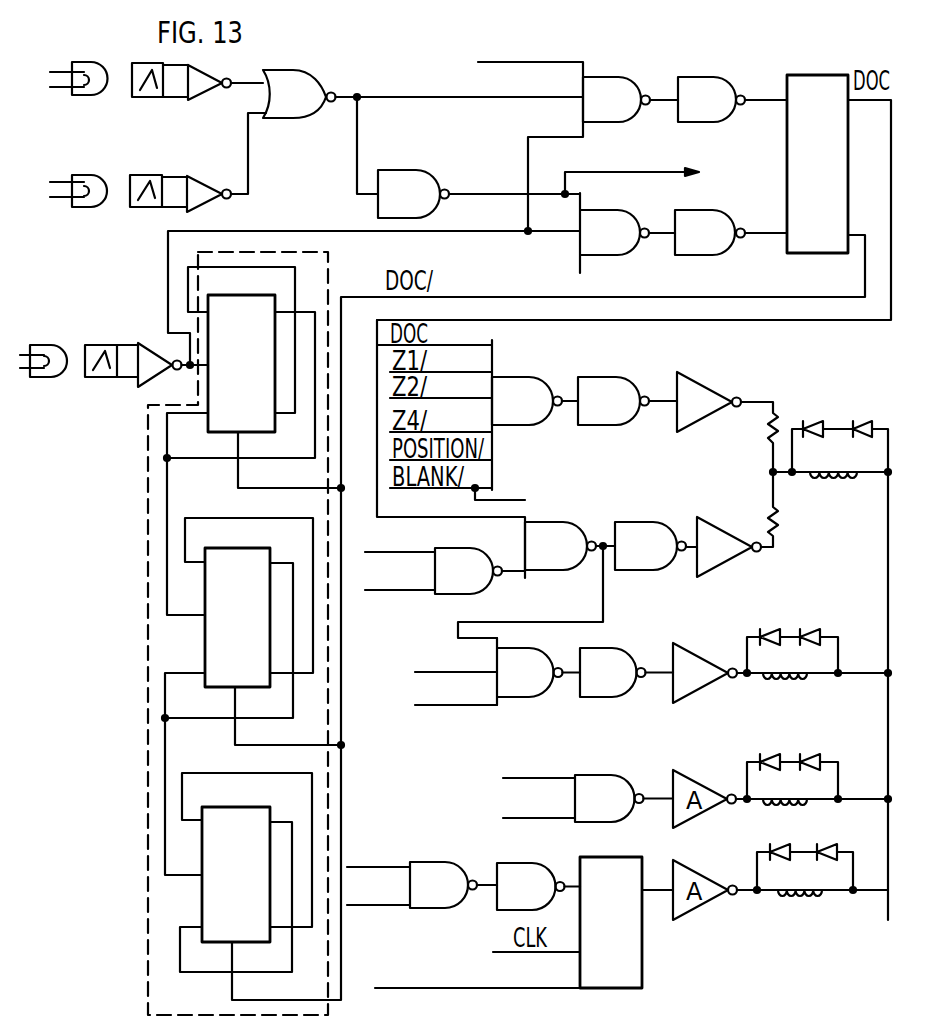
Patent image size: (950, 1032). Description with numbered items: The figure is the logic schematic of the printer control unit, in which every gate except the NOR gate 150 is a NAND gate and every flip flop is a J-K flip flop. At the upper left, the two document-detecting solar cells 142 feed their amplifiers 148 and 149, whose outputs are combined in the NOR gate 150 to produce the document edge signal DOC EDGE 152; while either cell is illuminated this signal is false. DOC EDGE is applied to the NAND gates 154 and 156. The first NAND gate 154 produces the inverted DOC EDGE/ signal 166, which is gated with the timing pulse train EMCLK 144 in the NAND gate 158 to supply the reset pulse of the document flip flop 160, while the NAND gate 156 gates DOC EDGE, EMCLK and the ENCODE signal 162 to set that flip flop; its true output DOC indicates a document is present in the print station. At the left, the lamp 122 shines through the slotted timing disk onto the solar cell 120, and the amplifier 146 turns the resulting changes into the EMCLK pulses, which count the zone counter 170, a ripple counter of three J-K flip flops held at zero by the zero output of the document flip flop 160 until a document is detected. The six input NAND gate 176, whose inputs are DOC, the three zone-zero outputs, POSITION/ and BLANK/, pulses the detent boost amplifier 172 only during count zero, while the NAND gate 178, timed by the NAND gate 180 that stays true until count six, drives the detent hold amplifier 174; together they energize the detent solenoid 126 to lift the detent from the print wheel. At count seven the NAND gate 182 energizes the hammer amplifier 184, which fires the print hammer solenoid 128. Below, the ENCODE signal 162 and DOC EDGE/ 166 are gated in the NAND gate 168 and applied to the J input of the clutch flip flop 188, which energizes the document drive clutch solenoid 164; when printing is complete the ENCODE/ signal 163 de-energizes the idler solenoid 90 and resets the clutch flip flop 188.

The idler solenoid 90 is at (808, 808).
The solar cell 120 is at (108, 343).
The lamp 122 is at (60, 378).
The detent solenoid 126 is at (853, 483).
The print hammer solenoid 128 is at (806, 688).
The solar cells 142 is at (152, 98).
The EMCLK timing pulses 144 is at (508, 218).
The amplifier 146 is at (139, 382).
The amplifier 148 is at (212, 100).
The amplifier 149 is at (214, 200).
The NOR gate 150 is at (317, 76).
The DOC EDGE signal 152 is at (428, 65).
The NAND gate 154 is at (420, 170).
The NAND gate 156 is at (631, 78).
The NAND gate 158 is at (614, 210).
The document flip flop 160 is at (800, 75).
The ENCODE signal 162 is at (558, 43).
The ENCODE/ signal 163 is at (470, 800).
The document drive clutch solenoid 164 is at (820, 903).
The DOC EDGE/ signal 166 is at (658, 157).
The NAND gate 168 is at (438, 862).
The zone counter 170 is at (147, 617).
The detent boost amplifier 172 is at (698, 385).
The detent hold amplifier 174 is at (729, 570).
The six input NAND gate 176 is at (535, 377).
The NAND gate 178 is at (568, 522).
The NAND gate 180 is at (485, 590).
The NAND gate 182 is at (525, 697).
The hammer amplifier 184 is at (700, 693).
The clutch flip flop 188 is at (645, 979).